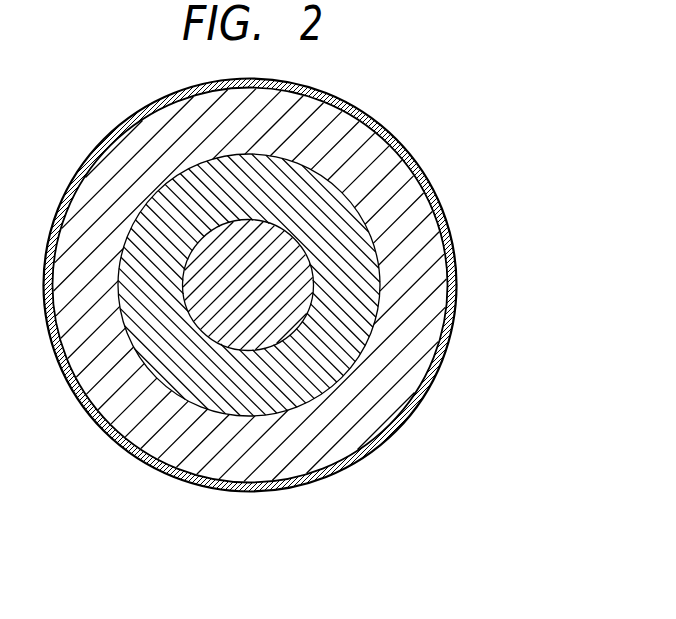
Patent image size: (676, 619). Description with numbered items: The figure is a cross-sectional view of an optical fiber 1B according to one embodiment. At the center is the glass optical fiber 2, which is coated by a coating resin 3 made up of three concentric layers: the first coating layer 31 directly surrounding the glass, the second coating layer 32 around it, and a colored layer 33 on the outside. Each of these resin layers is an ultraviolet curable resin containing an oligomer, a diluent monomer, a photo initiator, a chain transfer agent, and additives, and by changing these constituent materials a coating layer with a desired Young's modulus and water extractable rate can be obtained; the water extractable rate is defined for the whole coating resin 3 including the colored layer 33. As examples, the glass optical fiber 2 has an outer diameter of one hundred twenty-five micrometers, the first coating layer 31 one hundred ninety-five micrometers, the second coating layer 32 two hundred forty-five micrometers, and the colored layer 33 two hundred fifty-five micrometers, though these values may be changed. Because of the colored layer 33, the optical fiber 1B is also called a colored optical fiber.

The optical fiber 1B is at (462, 183).
The glass optical fiber 2 is at (292, 282).
The coating resin 3 is at (525, 335).
The first coating layer 31 is at (350, 337).
The second coating layer 32 is at (374, 403).
The colored layer 33 is at (368, 450).